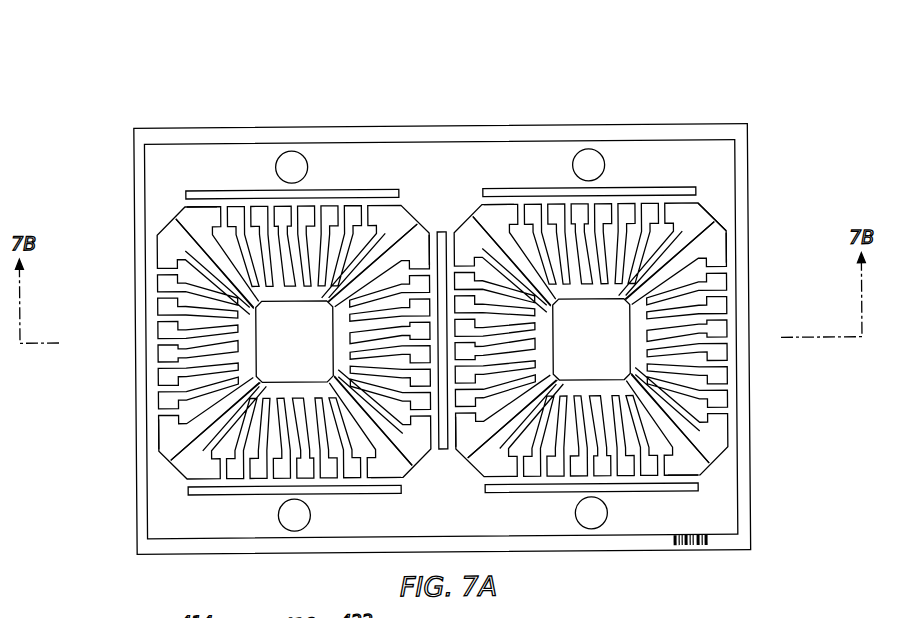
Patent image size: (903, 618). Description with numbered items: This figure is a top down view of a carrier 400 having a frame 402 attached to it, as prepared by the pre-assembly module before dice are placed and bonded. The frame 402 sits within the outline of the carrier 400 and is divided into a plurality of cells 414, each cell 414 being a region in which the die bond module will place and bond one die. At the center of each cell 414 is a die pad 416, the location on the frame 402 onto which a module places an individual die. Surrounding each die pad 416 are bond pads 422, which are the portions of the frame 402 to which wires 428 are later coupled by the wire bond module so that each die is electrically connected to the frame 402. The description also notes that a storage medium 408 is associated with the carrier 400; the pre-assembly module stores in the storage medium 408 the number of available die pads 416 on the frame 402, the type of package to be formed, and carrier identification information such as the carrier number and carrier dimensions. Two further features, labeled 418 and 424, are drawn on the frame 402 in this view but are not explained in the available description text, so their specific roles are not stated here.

The carrier 400 is at (746, 425).
The frame 402 is at (719, 514).
The storage medium 408 is at (693, 548).
The cell 414 is at (181, 162).
The die pad 416 is at (605, 347).
The corner tie bar lead 418 is at (690, 237).
The bond pad 422 is at (368, 290).
The dam bar 424 is at (641, 182).
The wire 428 is at (487, 190).